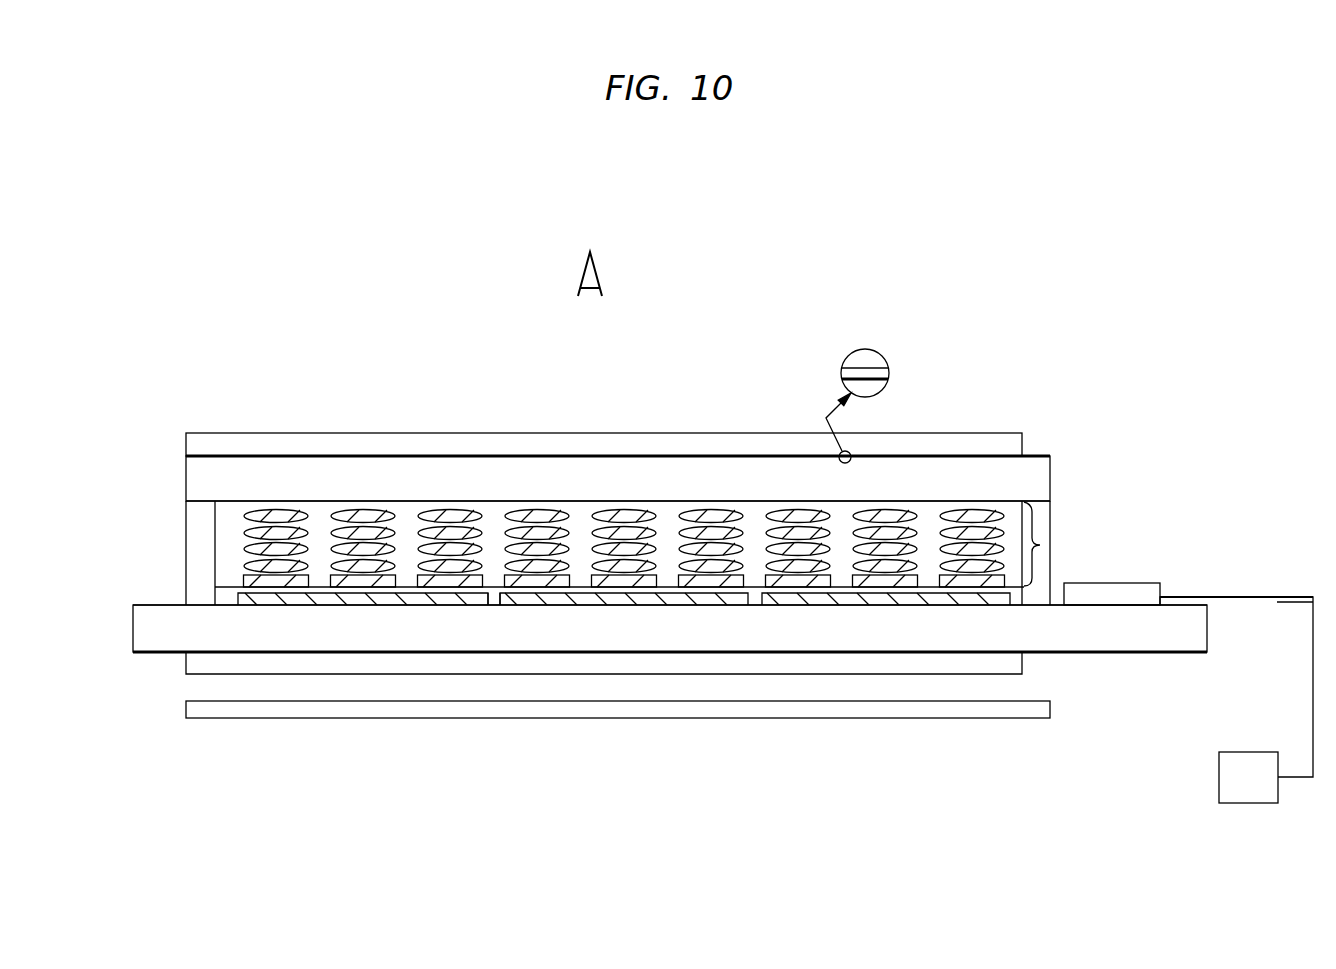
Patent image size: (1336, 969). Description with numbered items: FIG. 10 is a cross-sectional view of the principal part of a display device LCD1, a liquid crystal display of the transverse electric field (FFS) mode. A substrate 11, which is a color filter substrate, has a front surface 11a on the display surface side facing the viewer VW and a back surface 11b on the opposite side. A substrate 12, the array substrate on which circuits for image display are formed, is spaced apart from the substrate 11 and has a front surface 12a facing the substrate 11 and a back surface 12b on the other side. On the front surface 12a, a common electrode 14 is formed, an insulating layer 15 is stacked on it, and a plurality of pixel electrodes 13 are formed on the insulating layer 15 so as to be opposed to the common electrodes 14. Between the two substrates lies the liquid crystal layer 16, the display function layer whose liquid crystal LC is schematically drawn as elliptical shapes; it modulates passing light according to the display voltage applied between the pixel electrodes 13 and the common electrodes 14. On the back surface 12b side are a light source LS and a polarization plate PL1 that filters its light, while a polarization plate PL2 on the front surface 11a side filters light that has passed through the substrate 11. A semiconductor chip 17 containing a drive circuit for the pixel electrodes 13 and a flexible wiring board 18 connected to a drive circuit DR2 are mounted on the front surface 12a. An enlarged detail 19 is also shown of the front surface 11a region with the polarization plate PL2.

The substrate 11 is at (198, 477).
The front surface 11a is at (217, 453).
The back surface 11b is at (224, 503).
The substrate 12 is at (155, 623).
The front surface 12a is at (228, 604).
The back surface 12b is at (222, 652).
The pixel electrode 13 is at (262, 580).
The common electrode 14 is at (382, 600).
The insulating layer 15 is at (493, 588).
The liquid crystal layer 16 is at (1038, 545).
The semiconductor chip 17 is at (1128, 595).
The wiring board 18 is at (1237, 601).
The enlarged portion of upper surface 19 is at (852, 370).
The polarization plate PL2 is at (287, 440).
The polarization plate PL1 is at (833, 668).
The light source LS is at (731, 709).
The liquid crystal LC is at (972, 535).
The display device LCD1 is at (1018, 390).
The viewer VW is at (614, 268).
The drive circuit DR2 is at (1235, 783).